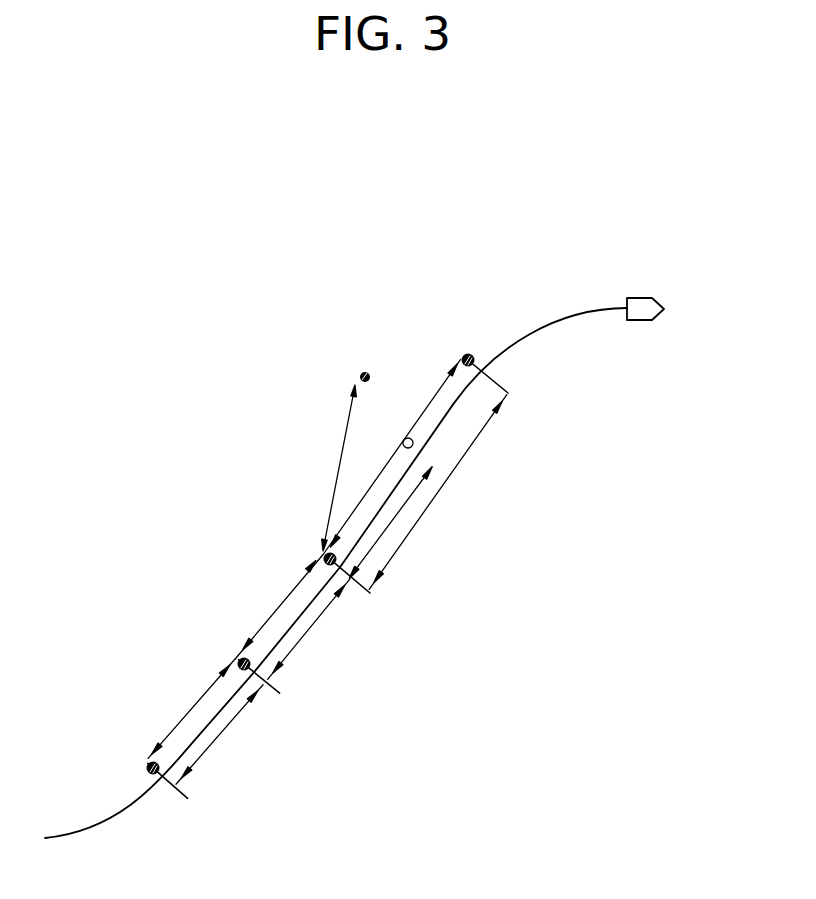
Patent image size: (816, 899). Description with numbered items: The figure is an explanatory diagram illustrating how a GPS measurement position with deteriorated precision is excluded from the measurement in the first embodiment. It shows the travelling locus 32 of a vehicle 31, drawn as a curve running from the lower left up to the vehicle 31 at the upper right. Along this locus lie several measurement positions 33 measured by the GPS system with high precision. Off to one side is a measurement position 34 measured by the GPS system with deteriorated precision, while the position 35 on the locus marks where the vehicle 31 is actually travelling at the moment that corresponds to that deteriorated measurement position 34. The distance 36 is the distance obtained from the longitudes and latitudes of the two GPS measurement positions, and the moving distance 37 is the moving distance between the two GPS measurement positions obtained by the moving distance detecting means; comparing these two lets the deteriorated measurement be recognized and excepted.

The vehicle 31 is at (637, 322).
The travelling locus 32 is at (558, 322).
The measurement position 33 is at (467, 353).
The measurement position 34 is at (362, 371).
The position 35 is at (409, 437).
The distance 36 is at (341, 446).
The moving distance 37 is at (398, 512).